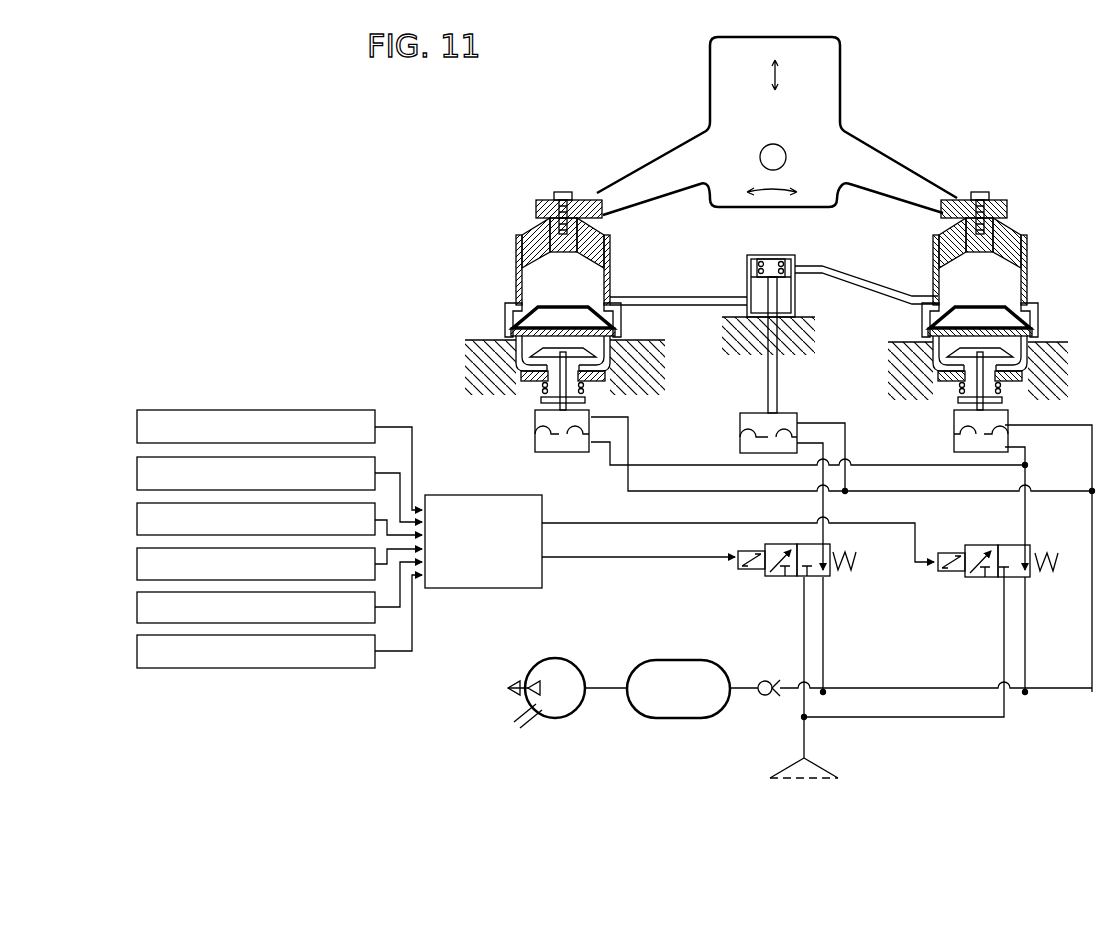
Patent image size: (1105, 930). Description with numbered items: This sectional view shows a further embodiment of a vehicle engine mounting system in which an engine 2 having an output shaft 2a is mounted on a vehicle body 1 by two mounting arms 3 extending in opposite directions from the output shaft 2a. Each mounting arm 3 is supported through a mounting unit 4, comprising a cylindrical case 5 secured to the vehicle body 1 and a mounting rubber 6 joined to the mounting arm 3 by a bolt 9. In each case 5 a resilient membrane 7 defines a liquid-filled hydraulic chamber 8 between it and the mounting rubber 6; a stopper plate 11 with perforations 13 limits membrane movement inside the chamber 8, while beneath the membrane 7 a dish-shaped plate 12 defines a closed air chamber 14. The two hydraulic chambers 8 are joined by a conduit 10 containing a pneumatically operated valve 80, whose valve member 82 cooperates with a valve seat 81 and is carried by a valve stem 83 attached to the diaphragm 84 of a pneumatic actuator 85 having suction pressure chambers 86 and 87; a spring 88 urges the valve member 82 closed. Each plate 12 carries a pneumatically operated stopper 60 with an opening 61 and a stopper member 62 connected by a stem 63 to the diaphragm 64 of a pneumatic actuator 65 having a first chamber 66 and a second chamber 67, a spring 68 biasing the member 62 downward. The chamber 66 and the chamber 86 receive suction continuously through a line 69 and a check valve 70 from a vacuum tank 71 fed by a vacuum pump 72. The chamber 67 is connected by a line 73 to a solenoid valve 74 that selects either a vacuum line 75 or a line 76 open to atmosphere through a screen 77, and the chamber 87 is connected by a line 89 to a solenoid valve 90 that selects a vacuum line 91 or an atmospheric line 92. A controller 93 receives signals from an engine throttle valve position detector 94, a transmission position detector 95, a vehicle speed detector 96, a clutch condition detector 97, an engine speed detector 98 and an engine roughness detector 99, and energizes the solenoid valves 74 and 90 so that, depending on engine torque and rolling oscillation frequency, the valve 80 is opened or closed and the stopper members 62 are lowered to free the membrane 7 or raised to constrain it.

The vehicle body 1 is at (640, 352).
The engine 2 is at (843, 55).
The output shaft 2a is at (780, 145).
The mounting arm 3 is at (657, 160).
The mounting unit 4 is at (517, 240).
The cylindrical case 5 is at (610, 252).
The mounting rubber 6 is at (598, 230).
The resilient membrane 7 is at (505, 318).
The hydraulic chamber 8 is at (612, 270).
The bolt 9 is at (562, 190).
The conduit 10 is at (690, 297).
The stopper plate 11 is at (516, 292).
The dish-shaped plate 12 is at (520, 355).
The perforations 13 is at (553, 307).
The air chamber 14 is at (520, 338).
The pneumatically operated stopper 60 is at (528, 398).
The opening 61 is at (520, 392).
The stopper member 62 is at (560, 350).
The stem 63 is at (622, 360).
The diaphragm 64 is at (612, 465).
The pneumatic actuator 65 is at (530, 433).
The first chamber 66 is at (600, 420).
The second chamber 67 is at (565, 450).
The spring 68 is at (603, 392).
The line 69 is at (747, 538).
The check valve 70 is at (766, 680).
The vacuum tank 71 is at (690, 660).
The vacuum pump 72 is at (575, 660).
The line 73 is at (915, 460).
The solenoid valve 74 is at (990, 545).
The line 75 is at (1028, 592).
The line 76 is at (1001, 595).
The screen 77 is at (828, 768).
The pneumatically operated valve 80 is at (792, 252).
The valve seat 81 is at (745, 277).
The valve member 82 is at (750, 258).
The valve stem 83 is at (778, 372).
The diaphragm 84 is at (742, 413).
The pneumatic actuator 85 is at (795, 410).
The suction pressure chamber 86 is at (800, 425).
The suction pressure chamber 87 is at (742, 440).
The spring 88 is at (785, 265).
The line 89 is at (835, 495).
The solenoid valve 90 is at (775, 543).
The line 91 is at (826, 592).
The line 92 is at (800, 592).
The controller 93 is at (490, 590).
The engine throttle valve position detector 94 is at (135, 473).
The transmission position detector 95 is at (135, 519).
The vehicle speed detector 96 is at (135, 564).
The clutch condition detector 97 is at (135, 651).
The engine speed detector 98 is at (135, 428).
The engine roughness detector 99 is at (135, 608).